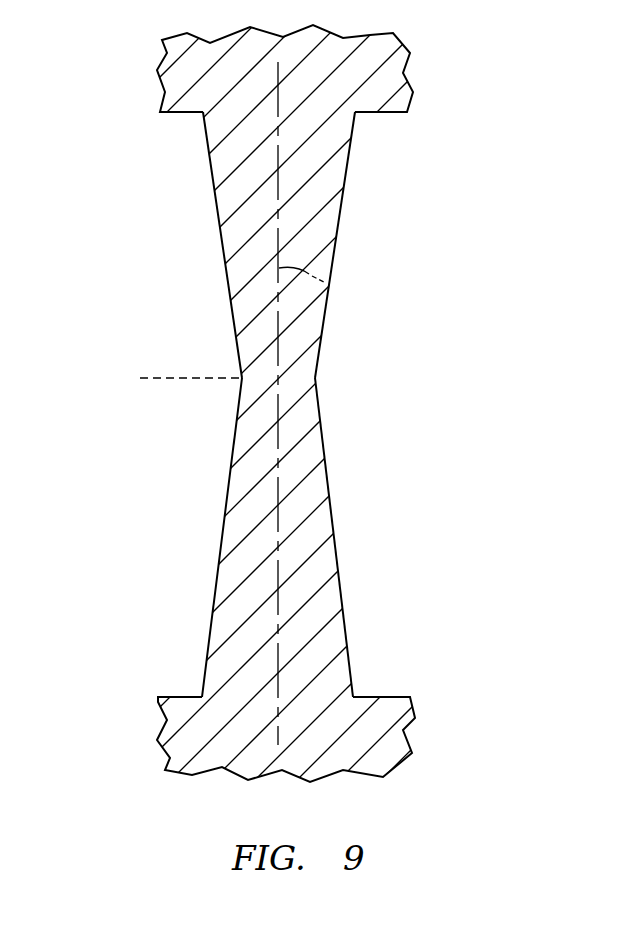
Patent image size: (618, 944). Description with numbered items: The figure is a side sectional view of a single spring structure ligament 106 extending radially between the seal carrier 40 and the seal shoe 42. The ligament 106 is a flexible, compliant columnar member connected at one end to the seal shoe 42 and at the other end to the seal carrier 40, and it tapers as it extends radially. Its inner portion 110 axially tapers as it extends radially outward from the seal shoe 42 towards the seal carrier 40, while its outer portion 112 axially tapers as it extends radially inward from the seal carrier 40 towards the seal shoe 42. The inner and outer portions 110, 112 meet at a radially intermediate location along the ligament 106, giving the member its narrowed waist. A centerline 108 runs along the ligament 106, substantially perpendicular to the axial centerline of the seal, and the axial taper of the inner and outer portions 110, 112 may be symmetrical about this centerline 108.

The seal carrier 40 is at (422, 72).
The seal shoe 42 is at (432, 727).
The ligament 106 is at (330, 371).
The centerline 108 is at (327, 280).
The inner portion 110 is at (146, 378).
The outer portion 112 is at (146, 113).